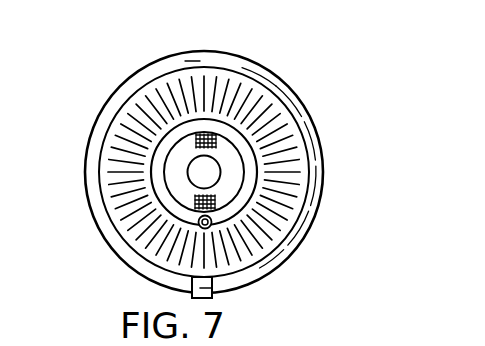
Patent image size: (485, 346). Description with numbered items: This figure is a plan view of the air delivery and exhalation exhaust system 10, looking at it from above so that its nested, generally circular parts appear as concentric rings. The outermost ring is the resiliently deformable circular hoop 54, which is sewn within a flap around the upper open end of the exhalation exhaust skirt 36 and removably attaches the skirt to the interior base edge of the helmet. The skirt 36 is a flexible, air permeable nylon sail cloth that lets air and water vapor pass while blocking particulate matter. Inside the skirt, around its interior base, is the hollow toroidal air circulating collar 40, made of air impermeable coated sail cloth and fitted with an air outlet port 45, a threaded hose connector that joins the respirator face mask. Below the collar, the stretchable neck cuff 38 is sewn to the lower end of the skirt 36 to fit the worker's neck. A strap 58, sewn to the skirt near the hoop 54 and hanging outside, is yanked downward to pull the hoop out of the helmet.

The air delivery and exhalation exhaust system 10 is at (288, 67).
The exhalation exhaust skirt 36 is at (280, 212).
The neck cuff 38 is at (232, 174).
The air circulating collar 40 is at (247, 137).
The air outlet port 45 is at (199, 221).
The circular hoop 54 is at (287, 249).
The strap 58 is at (212, 287).